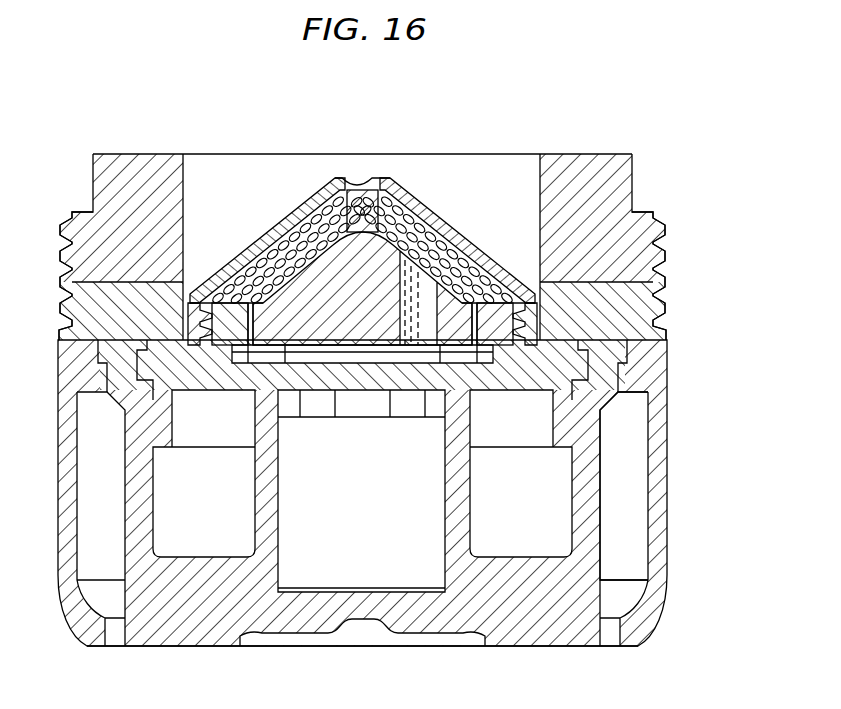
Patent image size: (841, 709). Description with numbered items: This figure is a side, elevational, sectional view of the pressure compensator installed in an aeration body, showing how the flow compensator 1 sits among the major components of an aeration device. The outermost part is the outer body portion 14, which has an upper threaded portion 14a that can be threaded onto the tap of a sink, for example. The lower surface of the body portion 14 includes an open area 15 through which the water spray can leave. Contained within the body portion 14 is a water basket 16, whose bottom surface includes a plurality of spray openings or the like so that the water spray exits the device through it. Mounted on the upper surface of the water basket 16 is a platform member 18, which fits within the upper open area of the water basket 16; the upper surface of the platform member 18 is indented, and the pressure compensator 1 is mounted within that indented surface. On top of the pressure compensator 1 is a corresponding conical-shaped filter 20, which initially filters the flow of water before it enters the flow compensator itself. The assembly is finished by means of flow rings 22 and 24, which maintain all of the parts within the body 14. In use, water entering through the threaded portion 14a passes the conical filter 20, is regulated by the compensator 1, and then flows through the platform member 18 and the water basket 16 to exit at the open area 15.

The flow compensator 1 is at (443, 176).
The outer body portion 14 is at (668, 462).
The upper threaded portion 14a is at (668, 257).
The open area 15 is at (626, 549).
The water basket 16 is at (197, 650).
The platform member 18 is at (557, 364).
The conical-shaped filter 20 is at (303, 208).
The flow ring 22 is at (117, 325).
The flow ring 24 is at (93, 177).